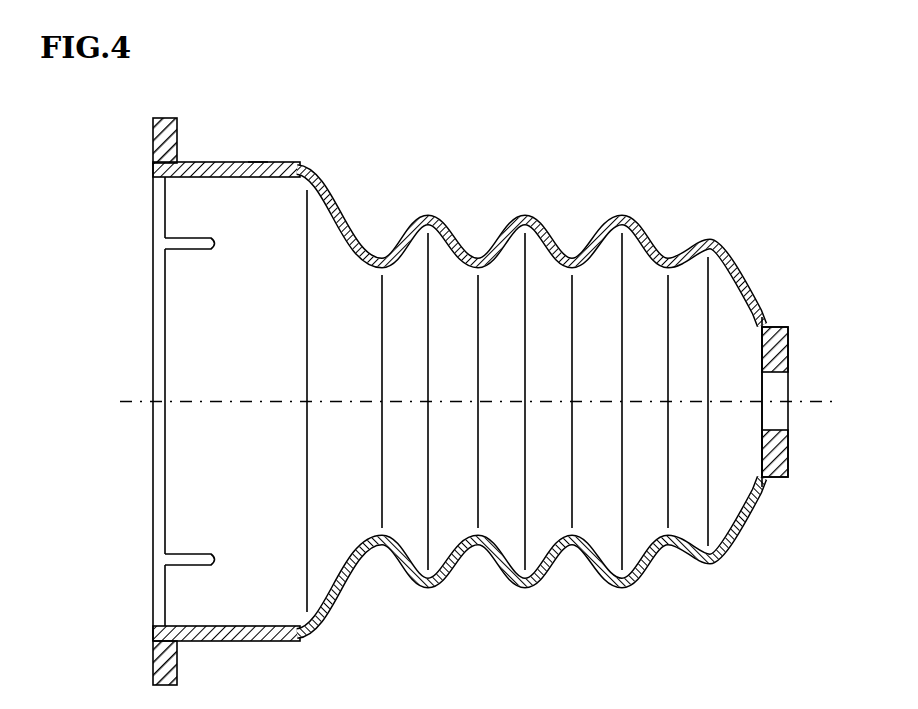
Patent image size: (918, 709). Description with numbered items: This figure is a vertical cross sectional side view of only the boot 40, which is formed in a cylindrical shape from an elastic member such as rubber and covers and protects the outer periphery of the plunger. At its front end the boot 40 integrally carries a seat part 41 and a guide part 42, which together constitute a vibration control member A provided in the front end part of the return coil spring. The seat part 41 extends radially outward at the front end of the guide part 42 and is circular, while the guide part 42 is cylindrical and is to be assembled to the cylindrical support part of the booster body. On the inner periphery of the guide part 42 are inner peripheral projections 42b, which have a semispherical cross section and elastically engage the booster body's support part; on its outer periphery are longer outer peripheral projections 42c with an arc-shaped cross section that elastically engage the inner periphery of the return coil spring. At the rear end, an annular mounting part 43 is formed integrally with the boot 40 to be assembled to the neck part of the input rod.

The boot 40 is at (623, 214).
The seat part 41 is at (165, 117).
The guide part 42 is at (286, 163).
The inner peripheral projections 42b is at (197, 250).
The outer peripheral projections 42c is at (216, 161).
The annular mounting part 43 is at (789, 353).
The vibration control member A is at (257, 162).